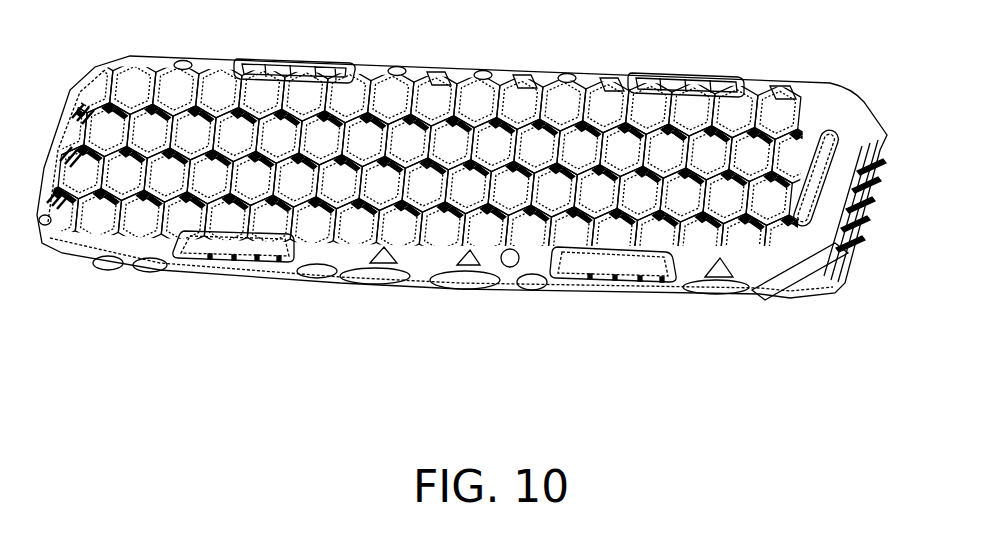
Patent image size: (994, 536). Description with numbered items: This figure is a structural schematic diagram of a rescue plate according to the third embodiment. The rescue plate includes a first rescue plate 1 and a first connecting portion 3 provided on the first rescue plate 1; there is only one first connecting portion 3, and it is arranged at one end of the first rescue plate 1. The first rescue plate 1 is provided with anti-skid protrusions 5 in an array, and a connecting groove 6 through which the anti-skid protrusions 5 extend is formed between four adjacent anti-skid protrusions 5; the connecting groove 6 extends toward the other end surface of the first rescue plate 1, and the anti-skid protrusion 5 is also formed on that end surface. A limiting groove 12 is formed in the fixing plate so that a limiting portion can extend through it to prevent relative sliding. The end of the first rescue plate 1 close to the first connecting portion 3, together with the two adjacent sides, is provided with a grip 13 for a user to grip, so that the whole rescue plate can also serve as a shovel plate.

The first rescue plate 1 is at (488, 207).
The first connecting portion 3 is at (864, 200).
The anti-skid protrusion 5 is at (453, 72).
The connecting groove 6 is at (497, 101).
The limiting groove 12 is at (862, 226).
The grip 13 is at (284, 60).